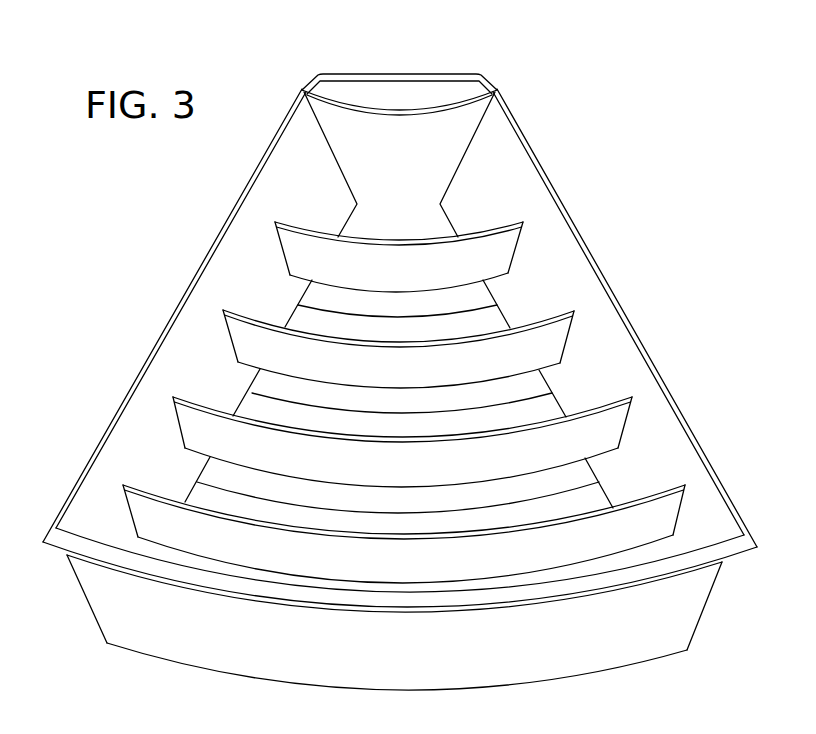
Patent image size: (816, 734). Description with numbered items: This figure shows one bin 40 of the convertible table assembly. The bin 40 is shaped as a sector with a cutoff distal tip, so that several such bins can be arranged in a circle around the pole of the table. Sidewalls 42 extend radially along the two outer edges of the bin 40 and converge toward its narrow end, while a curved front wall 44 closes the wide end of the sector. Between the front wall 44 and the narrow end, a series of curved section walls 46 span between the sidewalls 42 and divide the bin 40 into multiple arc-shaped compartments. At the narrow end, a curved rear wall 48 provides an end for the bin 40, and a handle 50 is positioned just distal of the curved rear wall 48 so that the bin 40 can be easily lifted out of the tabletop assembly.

The bin 40 is at (114, 251).
The sidewalls 42 is at (131, 388).
The curved front wall 44 is at (427, 658).
The curved section walls 46 is at (542, 463).
The curved rear wall 48 is at (417, 112).
The handle 50 is at (385, 77).